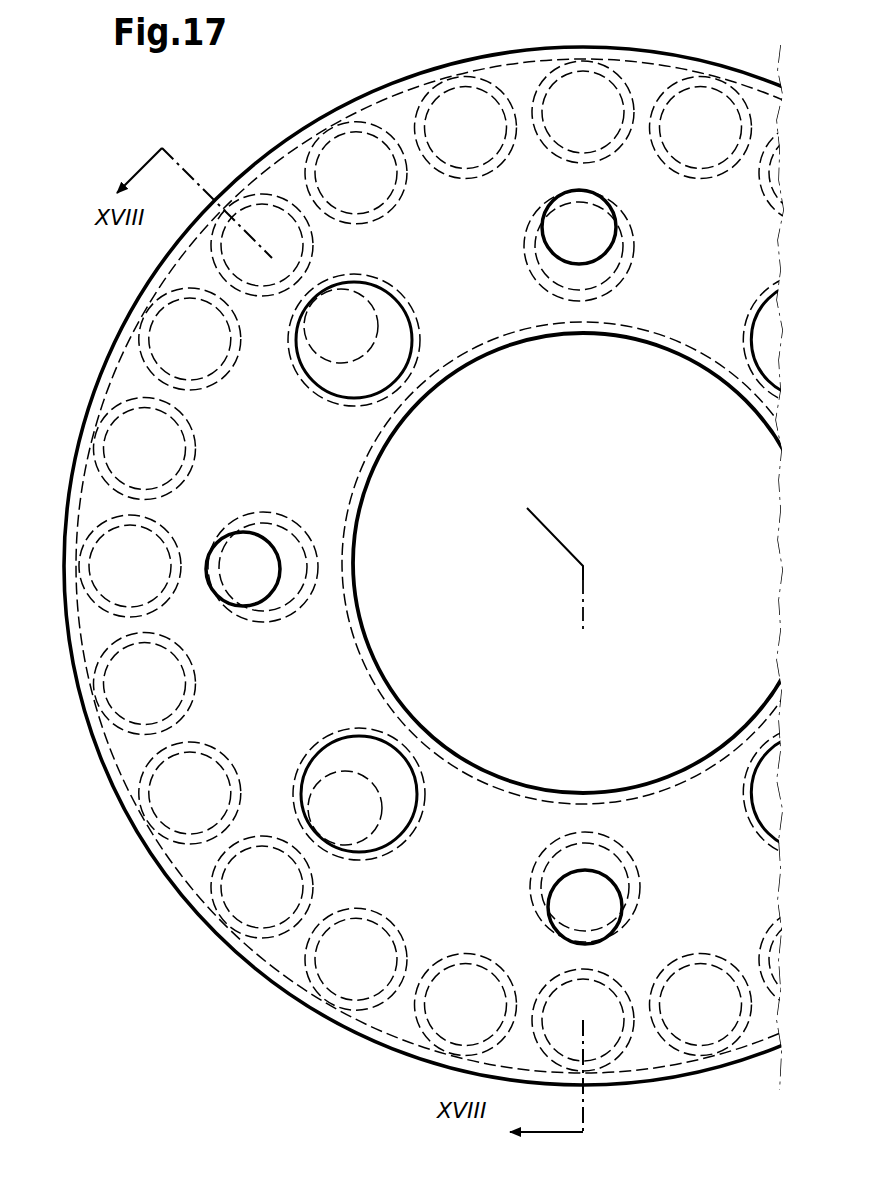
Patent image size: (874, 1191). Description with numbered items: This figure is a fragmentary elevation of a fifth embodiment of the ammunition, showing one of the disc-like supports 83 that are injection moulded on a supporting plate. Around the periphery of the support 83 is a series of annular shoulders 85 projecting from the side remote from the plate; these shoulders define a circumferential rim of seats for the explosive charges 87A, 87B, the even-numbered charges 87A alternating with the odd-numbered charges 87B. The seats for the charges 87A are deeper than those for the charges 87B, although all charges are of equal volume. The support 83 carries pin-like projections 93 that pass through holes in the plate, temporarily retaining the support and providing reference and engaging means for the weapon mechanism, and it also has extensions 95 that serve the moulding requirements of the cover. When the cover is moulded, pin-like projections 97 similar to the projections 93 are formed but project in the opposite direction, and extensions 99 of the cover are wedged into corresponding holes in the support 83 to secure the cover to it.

The disc-like support 83 is at (455, 363).
The annular shoulders 85 is at (197, 466).
The explosive charges 87A is at (442, 962).
The explosive charges 87B is at (262, 210).
The pin-like projections 93 is at (333, 362).
The extensions 95 is at (388, 372).
The pin-like projections 97 is at (553, 240).
The extensions 99 is at (583, 832).